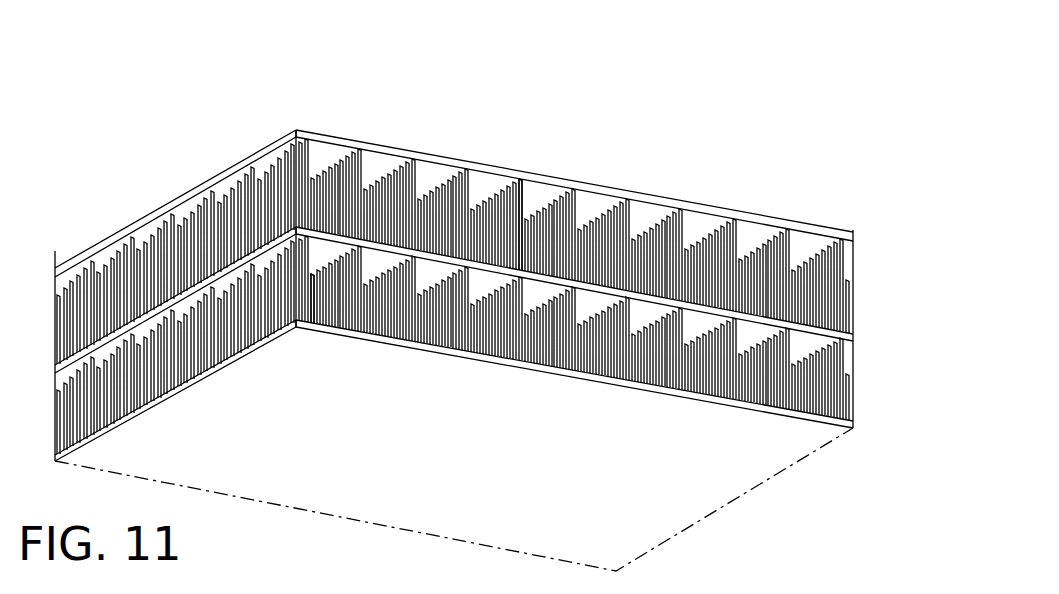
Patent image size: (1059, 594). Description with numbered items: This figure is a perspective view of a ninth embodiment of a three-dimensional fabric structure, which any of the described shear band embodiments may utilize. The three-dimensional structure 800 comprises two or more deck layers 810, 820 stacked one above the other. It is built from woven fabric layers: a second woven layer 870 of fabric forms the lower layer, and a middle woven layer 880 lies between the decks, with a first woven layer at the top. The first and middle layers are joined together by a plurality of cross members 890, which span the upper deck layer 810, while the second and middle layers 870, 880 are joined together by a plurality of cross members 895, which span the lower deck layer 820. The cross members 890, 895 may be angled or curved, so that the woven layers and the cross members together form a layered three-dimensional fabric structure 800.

The three-dimensional structure 800 is at (678, 106).
The deck layer 810 is at (830, 271).
The deck layer 820 is at (826, 365).
The second woven layer 870 is at (462, 350).
The middle woven layer 880 is at (512, 262).
The cross members 890 is at (513, 200).
The cross members 895 is at (308, 264).